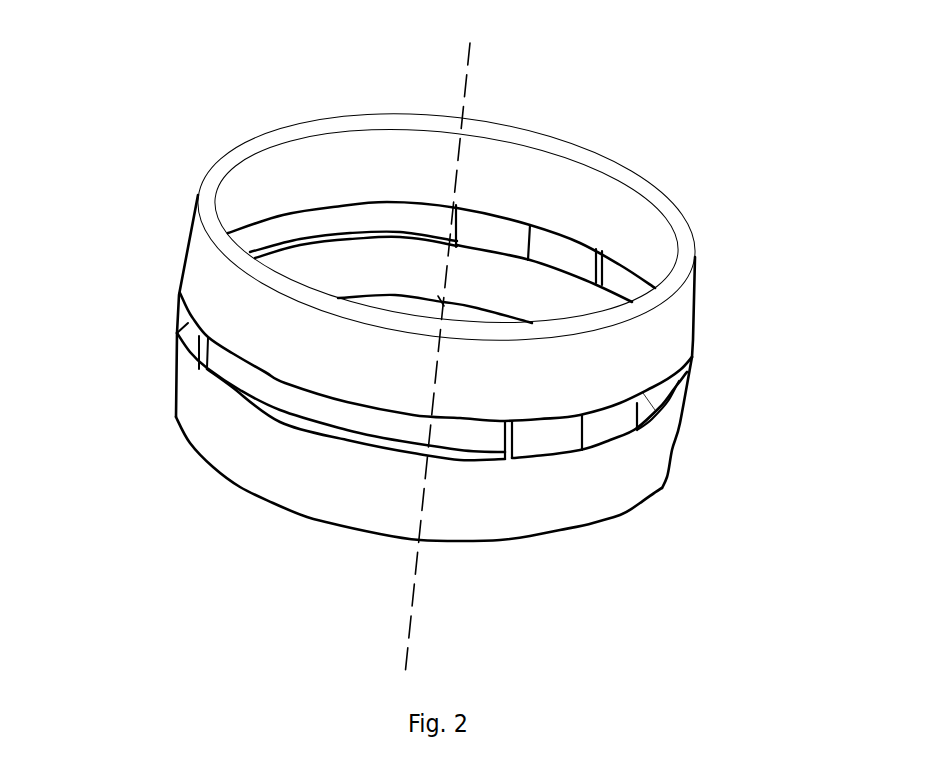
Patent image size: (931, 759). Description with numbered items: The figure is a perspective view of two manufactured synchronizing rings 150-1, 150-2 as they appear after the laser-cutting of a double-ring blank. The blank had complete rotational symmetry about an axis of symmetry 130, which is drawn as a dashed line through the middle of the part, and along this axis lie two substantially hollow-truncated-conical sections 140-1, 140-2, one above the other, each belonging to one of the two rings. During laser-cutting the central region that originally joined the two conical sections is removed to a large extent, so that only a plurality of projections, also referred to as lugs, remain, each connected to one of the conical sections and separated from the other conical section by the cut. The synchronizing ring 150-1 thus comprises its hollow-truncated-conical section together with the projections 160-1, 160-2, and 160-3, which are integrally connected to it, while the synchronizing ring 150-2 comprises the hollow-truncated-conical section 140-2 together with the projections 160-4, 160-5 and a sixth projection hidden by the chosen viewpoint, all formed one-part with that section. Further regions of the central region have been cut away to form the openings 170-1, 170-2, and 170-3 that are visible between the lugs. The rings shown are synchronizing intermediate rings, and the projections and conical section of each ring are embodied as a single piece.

The axis of symmetry 130 is at (467, 82).
The hollow-truncated-conical section 140-1 is at (563, 140).
The hollow-truncated-conical section 140-2 is at (442, 540).
The synchronizing ring 150-1 is at (668, 222).
The synchronizing ring 150-2 is at (590, 505).
The projection 160-1 is at (603, 433).
The projection 160-2 is at (490, 224).
The projection 160-3 is at (177, 335).
The projection 160-4 is at (542, 445).
The projection 160-5 is at (578, 253).
The opening 170-1 is at (675, 272).
The opening 170-2 is at (342, 220).
The opening 170-3 is at (318, 410).